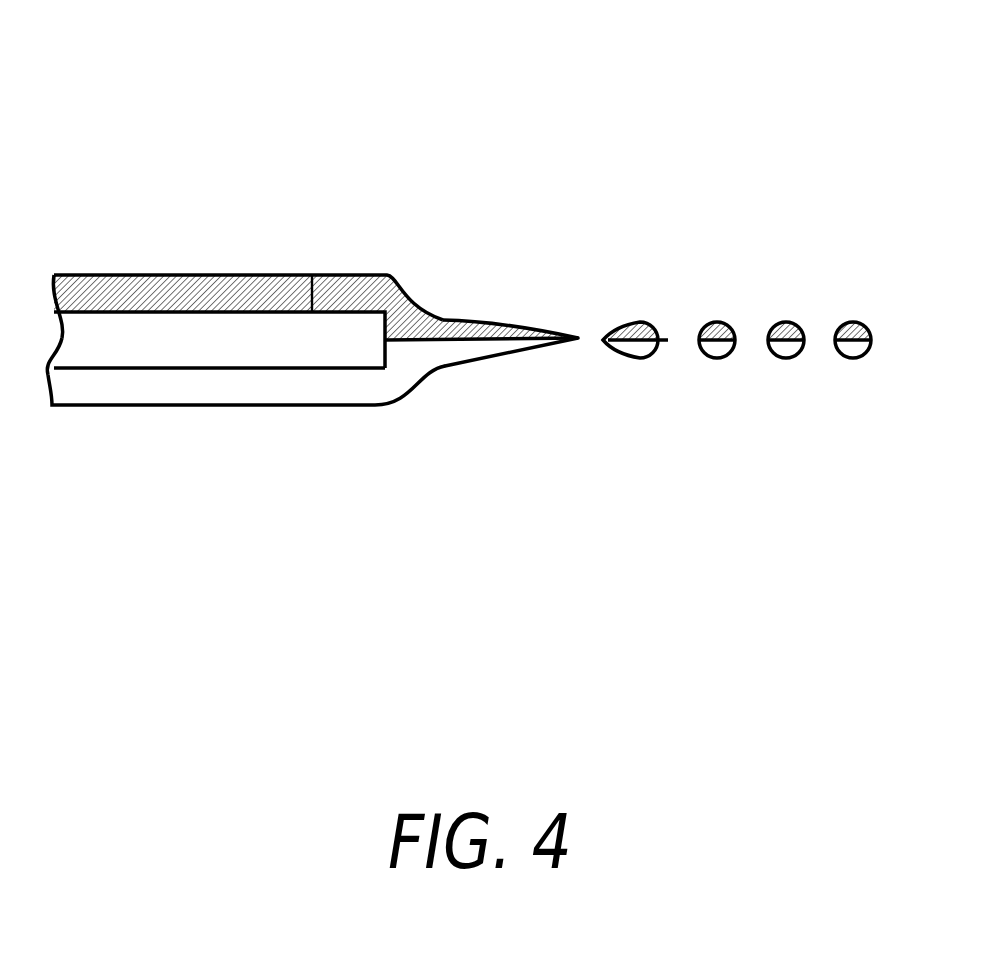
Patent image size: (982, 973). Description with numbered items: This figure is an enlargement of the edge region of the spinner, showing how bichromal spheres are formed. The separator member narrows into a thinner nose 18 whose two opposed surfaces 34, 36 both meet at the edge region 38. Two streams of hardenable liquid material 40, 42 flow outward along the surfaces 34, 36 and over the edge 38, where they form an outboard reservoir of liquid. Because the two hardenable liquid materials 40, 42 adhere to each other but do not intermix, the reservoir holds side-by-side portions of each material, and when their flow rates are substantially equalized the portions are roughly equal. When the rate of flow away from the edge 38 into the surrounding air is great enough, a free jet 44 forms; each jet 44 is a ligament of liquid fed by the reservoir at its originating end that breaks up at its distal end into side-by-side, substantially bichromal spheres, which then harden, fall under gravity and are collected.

The nose 18 is at (470, 157).
The opposed surface 34 is at (312, 276).
The opposed surface 36 is at (311, 372).
The edge region 38 is at (388, 347).
The hardenable liquid material 40 is at (130, 405).
The hardenable liquid material 42 is at (182, 276).
The free jet 44 is at (490, 322).